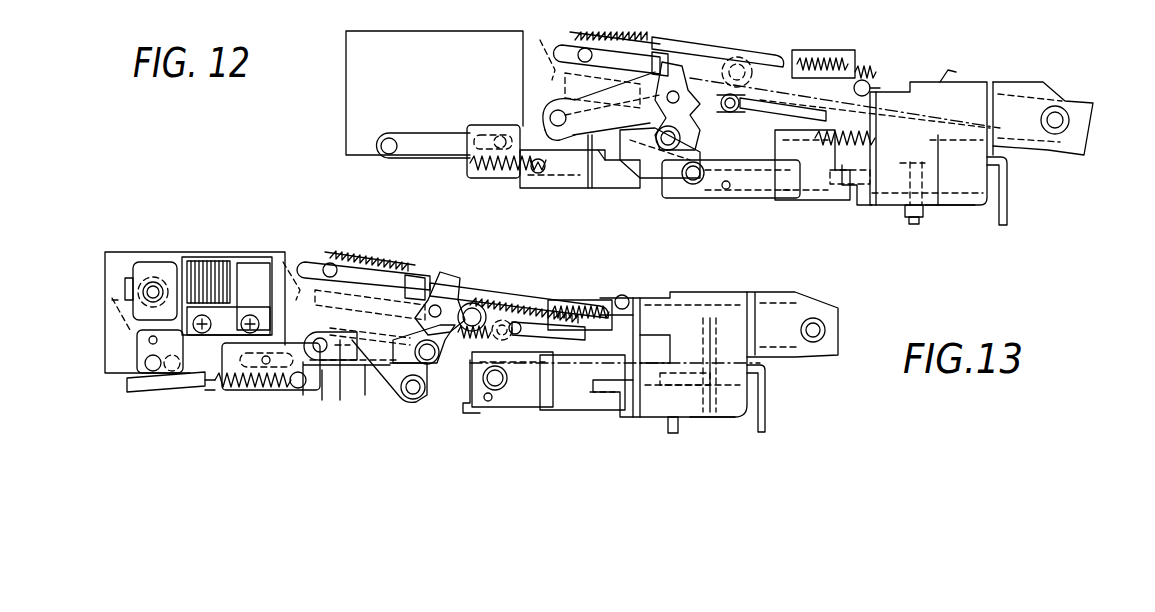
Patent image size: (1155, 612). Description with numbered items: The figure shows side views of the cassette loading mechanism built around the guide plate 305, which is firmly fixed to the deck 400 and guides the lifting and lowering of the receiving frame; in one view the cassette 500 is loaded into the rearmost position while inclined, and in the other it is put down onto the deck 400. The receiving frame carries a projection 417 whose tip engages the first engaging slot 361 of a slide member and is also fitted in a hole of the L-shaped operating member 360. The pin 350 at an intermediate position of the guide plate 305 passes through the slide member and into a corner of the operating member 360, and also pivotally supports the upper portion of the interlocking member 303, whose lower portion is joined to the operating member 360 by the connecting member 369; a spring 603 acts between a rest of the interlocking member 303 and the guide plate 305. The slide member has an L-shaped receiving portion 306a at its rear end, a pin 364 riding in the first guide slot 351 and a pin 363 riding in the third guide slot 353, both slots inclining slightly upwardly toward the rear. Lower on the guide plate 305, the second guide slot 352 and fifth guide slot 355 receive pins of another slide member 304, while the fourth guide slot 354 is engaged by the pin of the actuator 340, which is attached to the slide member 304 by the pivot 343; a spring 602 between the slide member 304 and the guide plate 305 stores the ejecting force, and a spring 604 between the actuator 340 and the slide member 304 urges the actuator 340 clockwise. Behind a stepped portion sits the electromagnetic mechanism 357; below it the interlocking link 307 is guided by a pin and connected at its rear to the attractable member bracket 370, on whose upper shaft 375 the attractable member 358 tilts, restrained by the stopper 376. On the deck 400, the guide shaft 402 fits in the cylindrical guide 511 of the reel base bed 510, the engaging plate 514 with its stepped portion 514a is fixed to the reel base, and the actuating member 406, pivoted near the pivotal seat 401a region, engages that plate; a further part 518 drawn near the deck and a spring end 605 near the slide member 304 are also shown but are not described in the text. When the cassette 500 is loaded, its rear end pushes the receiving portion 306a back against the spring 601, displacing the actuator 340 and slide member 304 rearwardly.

In FIG. 12, the interlocking member 303 is at (672, 165).
In FIG. 13, the interlocking member 303 is at (372, 360).
In FIG. 12, the slide member 304 is at (575, 180).
In FIG. 13, the slide member 304 is at (313, 390).
In FIG. 12, the guide plate 305 is at (922, 88).
In FIG. 13, the guide plate 305 is at (676, 300).
In FIG. 12, the receiving portion 306a is at (542, 40).
In FIG. 13, the receiving portion 306a is at (284, 262).
In FIG. 12, the interlocking link 307 is at (416, 150).
In FIG. 13, the interlocking link 307 is at (180, 386).
In FIG. 12, the actuator 340 is at (596, 140).
In FIG. 13, the actuator 340 is at (333, 373).
In FIG. 13, the pivot 343 is at (455, 389).
In FIG. 12, the pin 350 is at (684, 66).
In FIG. 13, the pin 350 is at (445, 274).
In FIG. 12, the first guide slot 351 is at (815, 100).
In FIG. 13, the first guide slot 351 is at (598, 300).
In FIG. 12, the second guide slot 352 is at (603, 38).
In FIG. 13, the second guide slot 352 is at (336, 252).
In FIG. 12, the third guide slot 353 is at (655, 62).
In FIG. 13, the third guide slot 353 is at (374, 290).
In FIG. 12, the fourth guide slot 354 is at (552, 108).
In FIG. 12, the fifth guide slot 355 is at (608, 178).
In FIG. 13, the fifth guide slot 355 is at (368, 398).
In FIG. 13, the electromagnetic mechanism 357 is at (208, 262).
In FIG. 13, the attractable member 358 is at (160, 262).
In FIG. 12, the L-shaped operating member 360 is at (660, 165).
In FIG. 12, the first engaging slot 361 is at (664, 54).
In FIG. 13, the first engaging slot 361 is at (412, 276).
In FIG. 12, the pin 363 is at (582, 47).
In FIG. 13, the pin 363 is at (322, 264).
In FIG. 12, the pin 364 is at (745, 112).
In FIG. 13, the pin 364 is at (478, 340).
In FIG. 12, the connecting member 369 is at (703, 190).
In FIG. 13, the connecting member 369 is at (410, 400).
In FIG. 13, the attractable member bracket 370 is at (137, 345).
In FIG. 13, the shaft 375 is at (150, 286).
In FIG. 13, the stopper 376 is at (125, 290).
In FIG. 12, the deck 400 is at (1008, 172).
In FIG. 13, the deck 400 is at (766, 386).
In FIG. 12, the pivotal seat 401a is at (1064, 104).
In FIG. 12, the guide shaft 402 is at (958, 206).
In FIG. 13, the guide shaft 402 is at (670, 431).
In FIG. 12, the actuating member 406 is at (870, 176).
In FIG. 12, the projection 417 is at (748, 62).
In FIG. 13, the projection 417 is at (508, 318).
In FIG. 12, the cassette 500 is at (1093, 127).
In FIG. 13, the cassette 500 is at (822, 310).
In FIG. 12, the reel base bed 510 is at (908, 214).
In FIG. 13, the reel base bed 510 is at (712, 417).
In FIG. 12, the cylindrical guide 511 is at (921, 218).
In FIG. 12, the engaging plate 514 is at (940, 182).
In FIG. 13, the engaging plate 514 is at (700, 375).
In FIG. 13, the stepped portion 514a is at (592, 405).
In FIG. 12, the armature bracket 518 is at (852, 195).
In FIG. 13, the armature bracket 518 is at (518, 400).
In FIG. 12, the spring 601 is at (812, 54).
In FIG. 13, the spring 601 is at (566, 300).
In FIG. 12, the spring 602 is at (520, 178).
In FIG. 13, the spring 602 is at (255, 390).
In FIG. 12, the spring 603 is at (702, 54).
In FIG. 13, the spring 603 is at (480, 300).
In FIG. 12, the spring 604 is at (737, 114).
In FIG. 13, the spring 604 is at (478, 303).
In FIG. 13, the spring end 605 is at (210, 390).